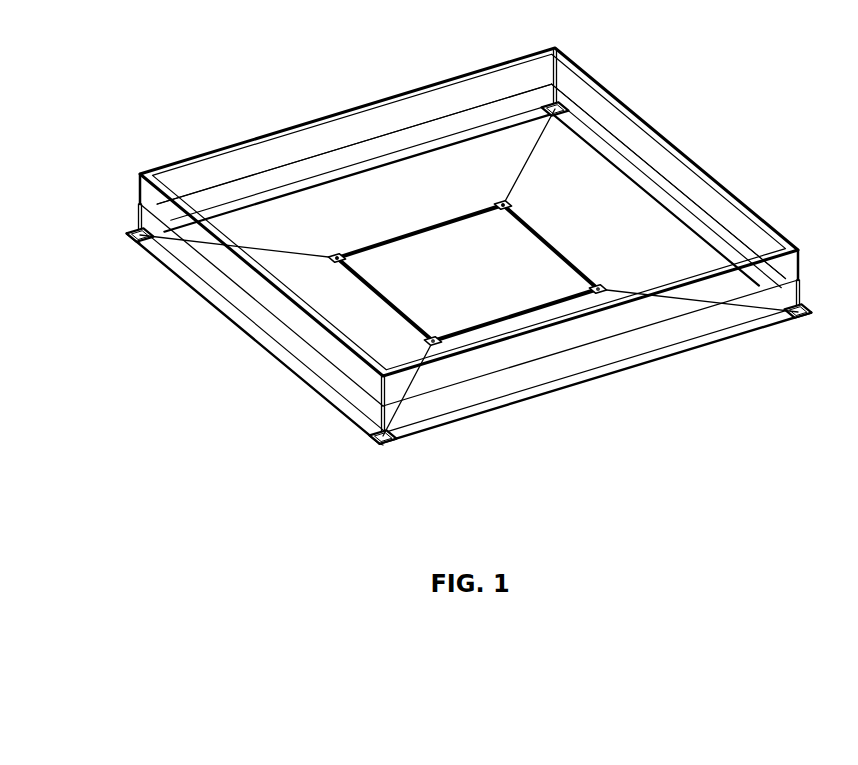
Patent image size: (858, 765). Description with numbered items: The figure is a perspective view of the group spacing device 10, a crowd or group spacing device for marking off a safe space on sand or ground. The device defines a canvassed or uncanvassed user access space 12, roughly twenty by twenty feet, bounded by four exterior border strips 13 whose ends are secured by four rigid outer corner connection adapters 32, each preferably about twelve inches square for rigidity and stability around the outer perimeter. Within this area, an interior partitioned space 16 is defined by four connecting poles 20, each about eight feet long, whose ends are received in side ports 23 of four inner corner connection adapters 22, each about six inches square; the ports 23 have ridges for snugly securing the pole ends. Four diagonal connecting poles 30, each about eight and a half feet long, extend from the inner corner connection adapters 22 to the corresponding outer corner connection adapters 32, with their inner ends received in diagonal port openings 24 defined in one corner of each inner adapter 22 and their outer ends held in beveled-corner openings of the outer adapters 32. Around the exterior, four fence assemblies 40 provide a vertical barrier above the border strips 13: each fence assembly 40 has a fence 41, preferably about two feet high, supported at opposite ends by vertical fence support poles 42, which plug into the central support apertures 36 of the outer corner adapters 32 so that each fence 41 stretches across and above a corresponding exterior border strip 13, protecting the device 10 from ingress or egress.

The group spacing device 10 is at (179, 62).
The user access space 12 is at (386, 201).
The exterior border strip 13 is at (670, 354).
The interior partitioned space 16 is at (441, 274).
The connecting pole 20 is at (362, 283).
The inner corner connection adapter 22 is at (339, 255).
The port 23 is at (505, 211).
The diagonal port opening 24 is at (332, 259).
The diagonal connecting pole 30 is at (269, 248).
The outer corner connection adapter 32 is at (130, 243).
The support aperture 36 is at (150, 245).
The fence assembly 40 is at (337, 107).
The fence 41 is at (437, 83).
The fence support pole 42 is at (139, 212).